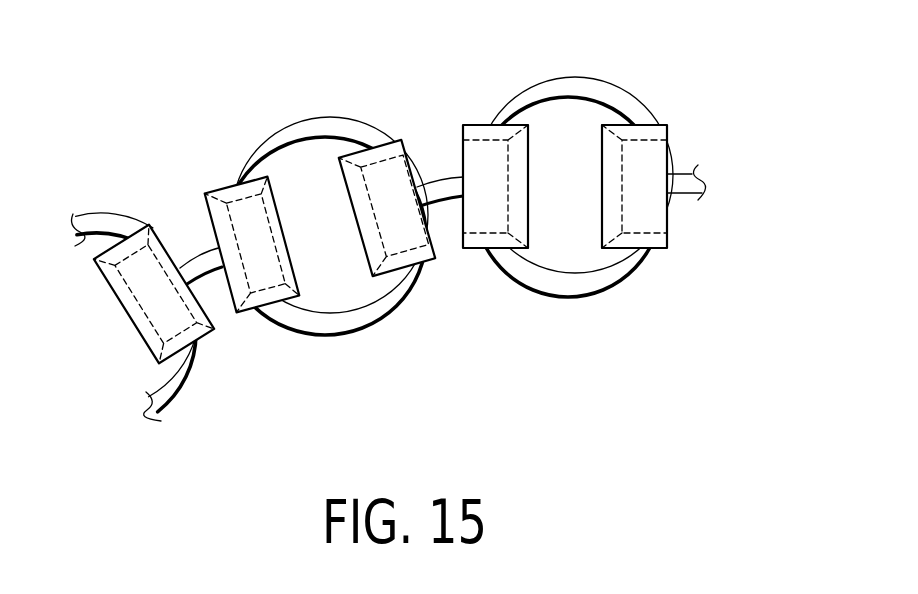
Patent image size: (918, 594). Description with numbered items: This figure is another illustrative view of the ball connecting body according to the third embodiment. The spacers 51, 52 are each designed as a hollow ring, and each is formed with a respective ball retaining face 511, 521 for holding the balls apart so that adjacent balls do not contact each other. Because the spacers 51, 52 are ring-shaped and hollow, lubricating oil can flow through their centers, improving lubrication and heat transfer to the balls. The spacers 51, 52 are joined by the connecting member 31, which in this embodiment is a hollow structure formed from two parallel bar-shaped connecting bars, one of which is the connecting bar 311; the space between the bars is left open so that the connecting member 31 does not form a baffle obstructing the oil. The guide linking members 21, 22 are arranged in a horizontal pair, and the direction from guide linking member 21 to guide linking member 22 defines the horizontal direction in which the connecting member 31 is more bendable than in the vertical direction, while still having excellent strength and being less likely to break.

The guide linking member 21 is at (390, 301).
The guide linking member 22 is at (279, 134).
The connecting member 31 is at (181, 241).
The connecting bar 311 is at (208, 253).
The spacer 51 is at (229, 215).
The spacer 52 is at (183, 318).
The ball retaining face 511 is at (285, 284).
The ball retaining face 521 is at (118, 262).